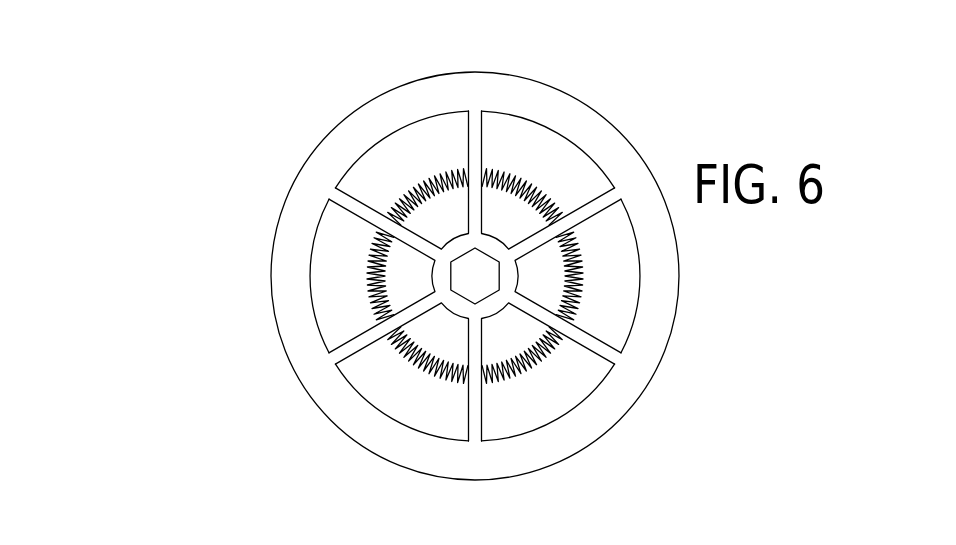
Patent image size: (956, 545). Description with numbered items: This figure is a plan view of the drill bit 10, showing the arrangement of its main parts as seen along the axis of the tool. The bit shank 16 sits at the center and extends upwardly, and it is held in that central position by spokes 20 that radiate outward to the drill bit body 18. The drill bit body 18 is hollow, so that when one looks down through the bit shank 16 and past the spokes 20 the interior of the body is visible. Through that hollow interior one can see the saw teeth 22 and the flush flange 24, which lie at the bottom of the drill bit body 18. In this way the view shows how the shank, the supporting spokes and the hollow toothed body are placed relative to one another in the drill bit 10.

The drill bit 10 is at (237, 282).
The bit shank 16 is at (475, 278).
The drill bit body 18 is at (548, 118).
The spokes 20 is at (368, 338).
The saw teeth 22 is at (420, 363).
The flush flange 24 is at (553, 380).